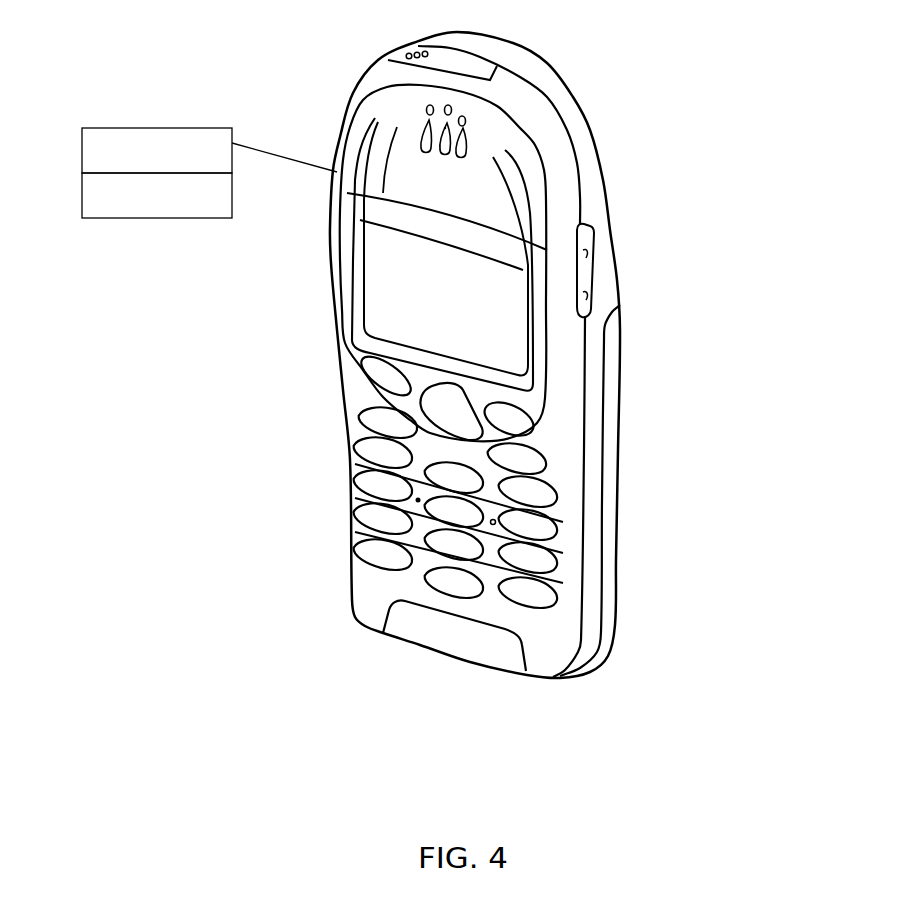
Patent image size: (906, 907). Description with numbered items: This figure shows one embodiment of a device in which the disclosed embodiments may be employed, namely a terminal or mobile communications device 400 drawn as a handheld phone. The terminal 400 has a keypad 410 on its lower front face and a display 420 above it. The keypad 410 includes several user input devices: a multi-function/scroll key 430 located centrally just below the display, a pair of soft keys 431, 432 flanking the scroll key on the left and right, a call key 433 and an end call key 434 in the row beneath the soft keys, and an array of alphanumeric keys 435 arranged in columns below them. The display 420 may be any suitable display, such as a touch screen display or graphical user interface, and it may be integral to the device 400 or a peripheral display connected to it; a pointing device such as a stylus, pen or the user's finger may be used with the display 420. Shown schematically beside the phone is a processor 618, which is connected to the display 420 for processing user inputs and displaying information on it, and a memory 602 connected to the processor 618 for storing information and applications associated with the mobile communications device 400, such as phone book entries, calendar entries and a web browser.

The mobile communications device 400 is at (572, 42).
The keypad 410 is at (545, 612).
The display 420 is at (497, 323).
The multi-function/scroll key 430 is at (460, 415).
The soft key 431 is at (387, 380).
The soft key 432 is at (522, 417).
The call key 433 is at (385, 418).
The end call key 434 is at (520, 458).
The alphanumeric keys 435 is at (383, 557).
The processor 618 is at (128, 128).
The memory 602 is at (128, 218).